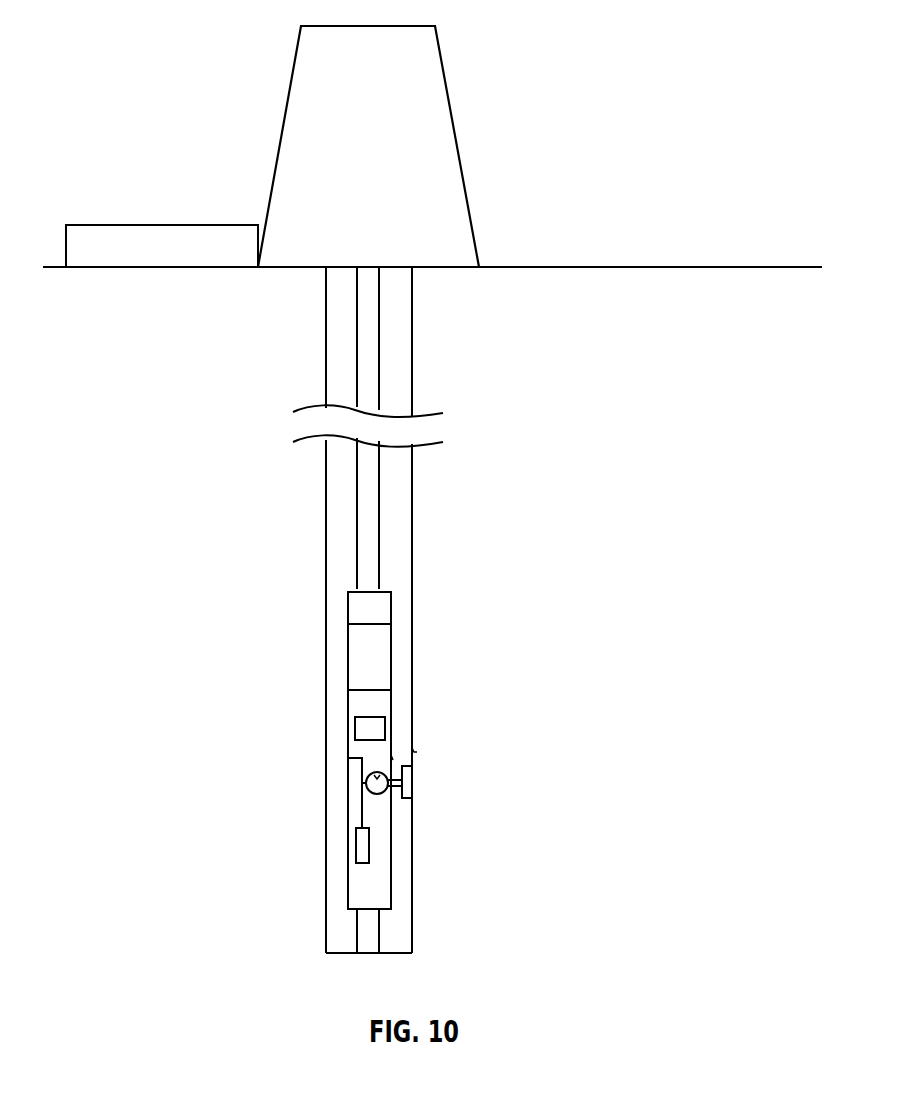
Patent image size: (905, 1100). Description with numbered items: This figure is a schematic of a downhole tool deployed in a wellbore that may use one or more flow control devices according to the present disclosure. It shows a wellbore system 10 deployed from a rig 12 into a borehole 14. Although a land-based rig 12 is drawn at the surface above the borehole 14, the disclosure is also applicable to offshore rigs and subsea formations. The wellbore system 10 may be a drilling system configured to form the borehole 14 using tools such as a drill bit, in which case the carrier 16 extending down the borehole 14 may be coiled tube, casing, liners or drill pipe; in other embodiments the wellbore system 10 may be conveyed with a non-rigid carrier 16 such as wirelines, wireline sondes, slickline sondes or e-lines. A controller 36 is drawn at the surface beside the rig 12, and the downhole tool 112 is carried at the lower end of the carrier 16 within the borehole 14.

The wellbore system 10 is at (498, 245).
The rig 12 is at (458, 145).
The borehole 14 is at (398, 395).
The carrier 16 is at (372, 347).
The controller 36 is at (108, 223).
The downhole tool 112 is at (386, 725).